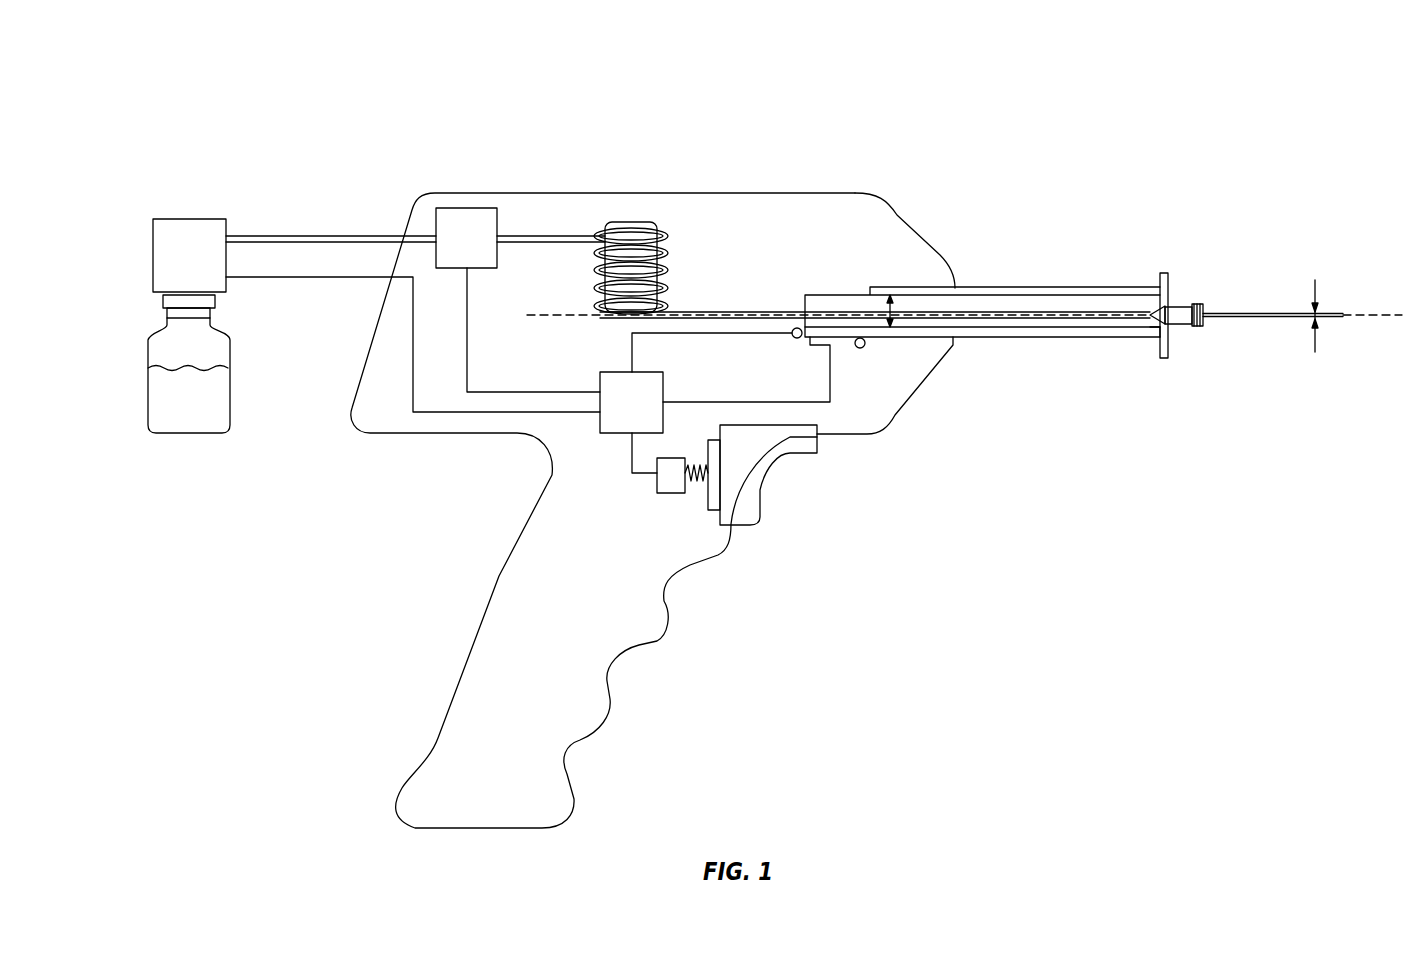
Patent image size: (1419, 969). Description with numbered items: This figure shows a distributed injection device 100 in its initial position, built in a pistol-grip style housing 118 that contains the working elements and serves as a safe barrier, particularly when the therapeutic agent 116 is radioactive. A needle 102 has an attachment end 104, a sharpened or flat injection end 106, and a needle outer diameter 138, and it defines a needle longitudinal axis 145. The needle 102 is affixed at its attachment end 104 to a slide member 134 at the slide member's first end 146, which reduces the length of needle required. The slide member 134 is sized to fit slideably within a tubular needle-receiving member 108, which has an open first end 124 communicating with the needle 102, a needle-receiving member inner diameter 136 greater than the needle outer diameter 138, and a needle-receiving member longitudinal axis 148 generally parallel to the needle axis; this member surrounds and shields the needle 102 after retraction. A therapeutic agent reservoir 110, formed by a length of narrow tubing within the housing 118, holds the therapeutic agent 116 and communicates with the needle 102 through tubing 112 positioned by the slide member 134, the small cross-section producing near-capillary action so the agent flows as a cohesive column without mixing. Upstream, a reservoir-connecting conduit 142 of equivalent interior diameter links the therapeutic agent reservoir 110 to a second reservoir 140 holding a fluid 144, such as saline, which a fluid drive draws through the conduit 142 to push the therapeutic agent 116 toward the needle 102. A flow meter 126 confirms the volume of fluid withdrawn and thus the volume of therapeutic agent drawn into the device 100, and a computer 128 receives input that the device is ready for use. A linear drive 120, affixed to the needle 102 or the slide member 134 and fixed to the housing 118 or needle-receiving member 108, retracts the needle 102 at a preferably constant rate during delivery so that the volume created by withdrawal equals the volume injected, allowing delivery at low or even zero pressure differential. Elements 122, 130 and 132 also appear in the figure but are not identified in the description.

The distributed injection device 100 is at (1134, 118).
The needle 102 is at (1263, 311).
The attachment end 104 is at (1173, 308).
The injection end 106 is at (1343, 315).
The needle-receiving member 108 is at (1028, 287).
The therapeutic agent reservoir 110 is at (630, 222).
The tubing 112 is at (600, 310).
The therapeutic agent 116 is at (670, 258).
The housing 118 is at (495, 594).
The linear drive 120 is at (838, 345).
The knurled fitting 122 is at (1173, 325).
The open first end 124 is at (1157, 328).
The flow meter 126 is at (457, 207).
The computer 128 is at (617, 434).
The roller / guide 130 is at (793, 340).
The trigger 132 is at (765, 502).
The slide member 134 is at (1015, 328).
The needle-receiving member inner diameter 136 is at (888, 300).
The needle outer diameter 138 is at (1315, 290).
The second reservoir 140 is at (562, 320).
The reservoir-connecting conduit 142 is at (318, 233).
The fluid 144 is at (168, 219).
The needle longitudinal axis 145 is at (163, 407).
The first end 146 is at (1165, 297).
The needle-receiving member longitudinal axis 148 is at (163, 323).